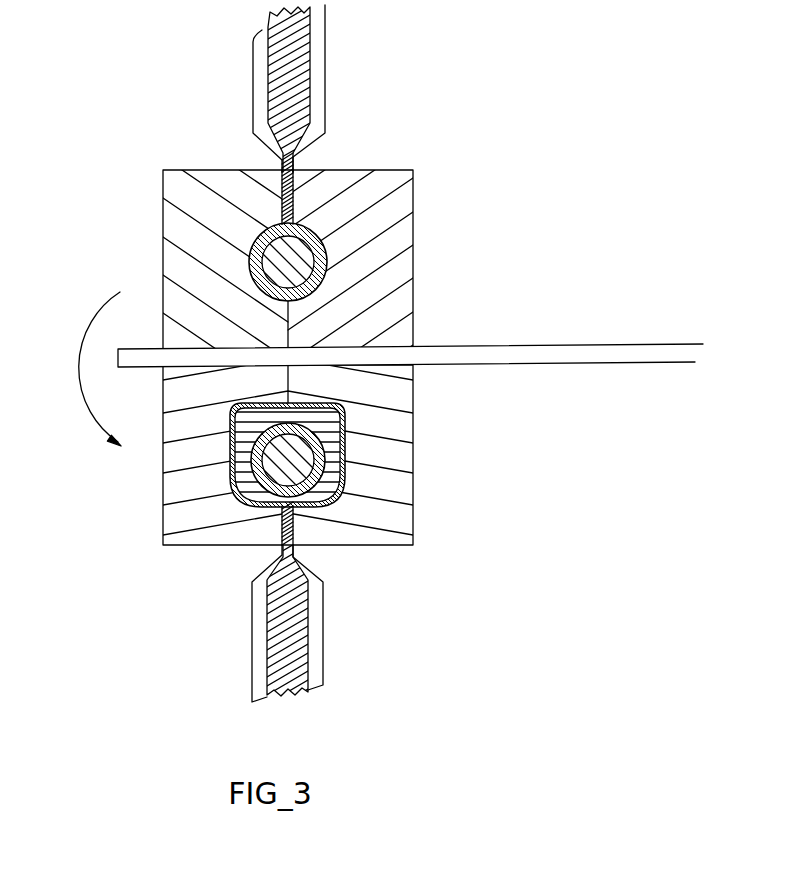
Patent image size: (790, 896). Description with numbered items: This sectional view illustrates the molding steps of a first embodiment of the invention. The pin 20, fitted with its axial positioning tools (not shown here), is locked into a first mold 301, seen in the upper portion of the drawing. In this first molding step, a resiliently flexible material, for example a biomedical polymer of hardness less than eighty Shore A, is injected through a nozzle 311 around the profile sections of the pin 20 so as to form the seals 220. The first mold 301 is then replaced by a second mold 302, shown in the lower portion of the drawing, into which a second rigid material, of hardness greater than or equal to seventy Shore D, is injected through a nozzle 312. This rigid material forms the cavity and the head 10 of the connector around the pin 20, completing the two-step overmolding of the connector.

The head 10 is at (250, 487).
The pin 20 is at (323, 248).
The seals 220 is at (243, 248).
The first mold 301 is at (395, 237).
The mold 302 is at (395, 455).
The nozzle 311 is at (318, 78).
The nozzle 312 is at (323, 645).